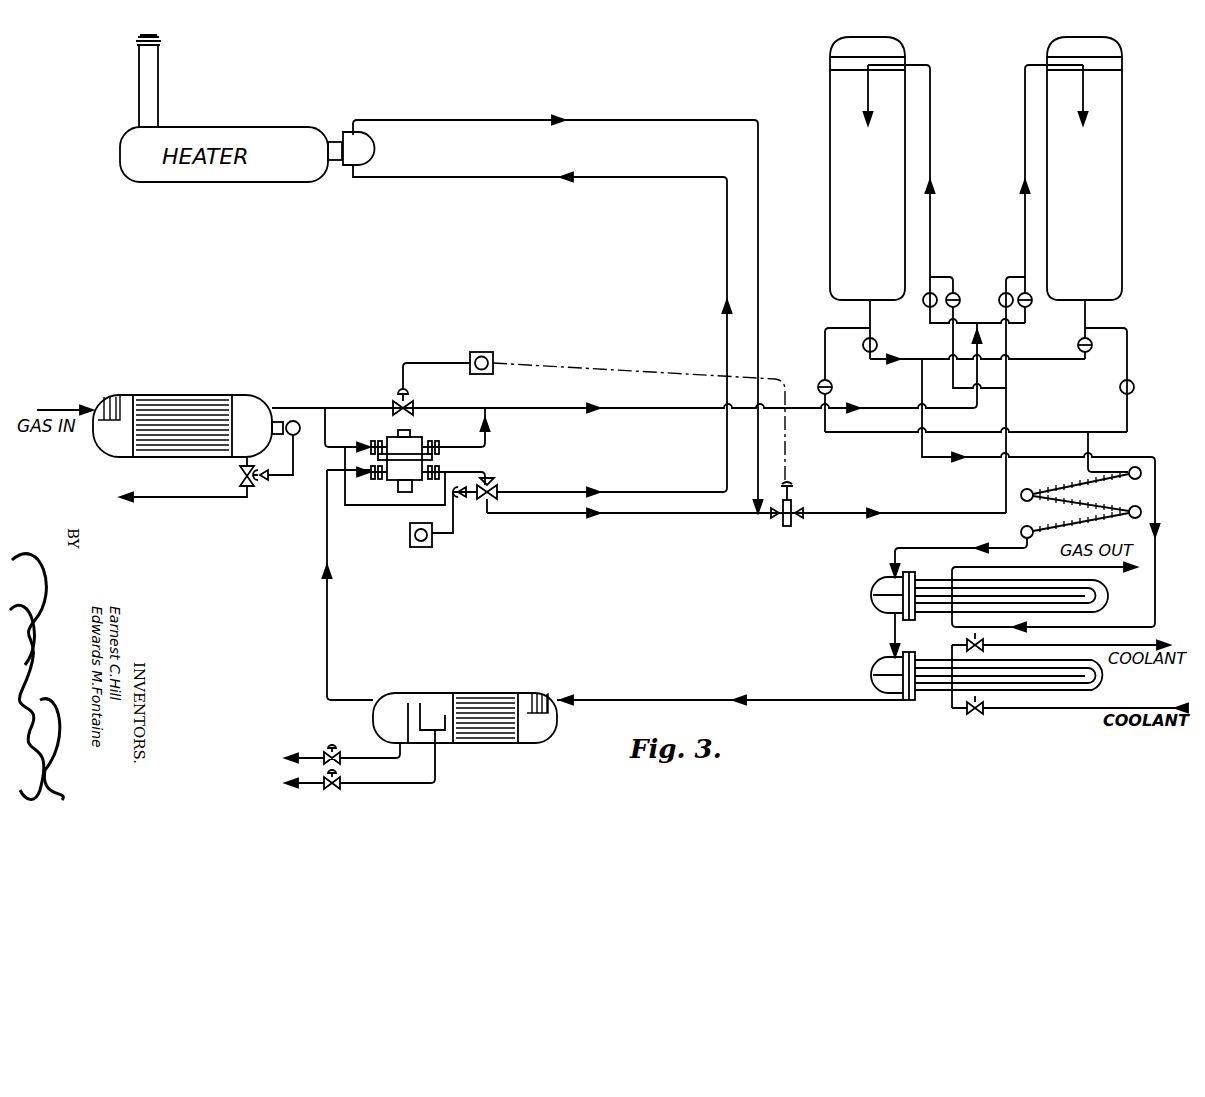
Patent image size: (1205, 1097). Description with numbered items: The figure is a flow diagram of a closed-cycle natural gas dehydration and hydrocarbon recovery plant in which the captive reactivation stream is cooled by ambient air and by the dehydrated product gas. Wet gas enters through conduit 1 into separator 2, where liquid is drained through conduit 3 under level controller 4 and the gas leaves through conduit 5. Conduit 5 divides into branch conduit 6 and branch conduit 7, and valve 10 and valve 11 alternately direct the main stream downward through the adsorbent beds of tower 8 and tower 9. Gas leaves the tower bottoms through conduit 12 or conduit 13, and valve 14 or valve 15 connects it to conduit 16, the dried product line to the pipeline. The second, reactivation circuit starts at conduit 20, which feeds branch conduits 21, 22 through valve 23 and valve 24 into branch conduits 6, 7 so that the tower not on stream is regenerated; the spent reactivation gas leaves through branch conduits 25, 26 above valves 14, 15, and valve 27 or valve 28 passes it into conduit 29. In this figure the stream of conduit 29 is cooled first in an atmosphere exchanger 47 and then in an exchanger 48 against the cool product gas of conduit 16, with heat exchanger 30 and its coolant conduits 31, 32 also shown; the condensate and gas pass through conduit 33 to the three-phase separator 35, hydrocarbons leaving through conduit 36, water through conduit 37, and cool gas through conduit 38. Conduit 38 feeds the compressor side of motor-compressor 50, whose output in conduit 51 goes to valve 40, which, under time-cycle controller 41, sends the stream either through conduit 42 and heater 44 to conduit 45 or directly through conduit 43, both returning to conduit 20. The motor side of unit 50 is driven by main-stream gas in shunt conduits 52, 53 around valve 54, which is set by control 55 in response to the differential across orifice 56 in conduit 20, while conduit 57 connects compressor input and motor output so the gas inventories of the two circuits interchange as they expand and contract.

The conduit 1 is at (65, 408).
The separator 2 is at (164, 395).
The conduit 3 is at (194, 495).
The level controller 4 is at (296, 434).
The conduit 5 is at (310, 408).
The branch conduit 6 is at (930, 150).
The branch conduit 7 is at (1025, 122).
The tower 8 is at (867, 168).
The tower 9 is at (1084, 168).
The valve 10 is at (924, 307).
The valve 11 is at (1030, 306).
The conduit 12 is at (866, 324).
The conduit 13 is at (1085, 325).
The valve 14 is at (864, 349).
The valve 15 is at (1090, 347).
The conduit 16 is at (922, 387).
The conduit 20 is at (955, 509).
The branch conduit 21 is at (953, 382).
The branch conduit 22 is at (1006, 385).
The valve 23 is at (960, 288).
The valve 24 is at (1000, 300).
The branch conduit 25 is at (857, 440).
The branch conduit 26 is at (1127, 422).
The valve 27 is at (818, 382).
The valve 28 is at (1134, 380).
The conduit 29 is at (917, 550).
The heat exchanger 30 is at (1107, 690).
The conduit 31 is at (1046, 709).
The conduit 32 is at (1028, 648).
The conduit 33 is at (636, 700).
The separator 35 is at (457, 693).
The conduit 36 is at (435, 776).
The conduit 37 is at (356, 756).
The conduit 38 is at (327, 634).
The valve 40 is at (483, 504).
The time-cycle controller 41 is at (434, 549).
The conduit 42 is at (648, 490).
The conduit 43 is at (652, 514).
The heater 44 is at (214, 127).
The conduit 45 is at (478, 120).
The finned air cooler 47 is at (1104, 505).
The heat exchanger 48 is at (1108, 590).
The motor-compressor 50 is at (410, 456).
The conduit 51 is at (486, 468).
The shunt conduit 52 is at (325, 441).
The shunt conduit 53 is at (488, 439).
The valve 54 is at (406, 405).
The control 55 is at (491, 350).
The orifice 56 is at (792, 502).
The conduit 57 is at (387, 513).